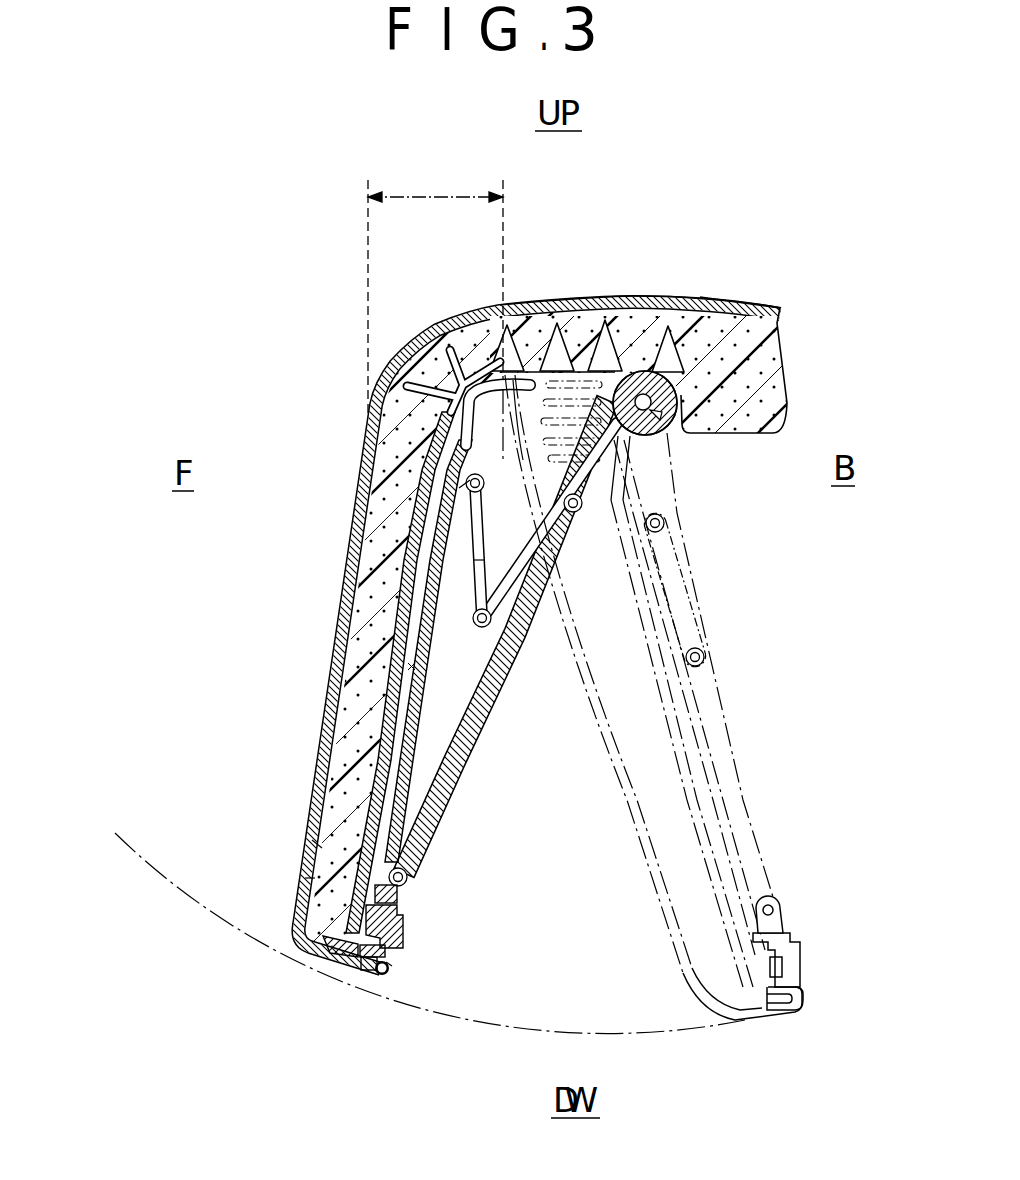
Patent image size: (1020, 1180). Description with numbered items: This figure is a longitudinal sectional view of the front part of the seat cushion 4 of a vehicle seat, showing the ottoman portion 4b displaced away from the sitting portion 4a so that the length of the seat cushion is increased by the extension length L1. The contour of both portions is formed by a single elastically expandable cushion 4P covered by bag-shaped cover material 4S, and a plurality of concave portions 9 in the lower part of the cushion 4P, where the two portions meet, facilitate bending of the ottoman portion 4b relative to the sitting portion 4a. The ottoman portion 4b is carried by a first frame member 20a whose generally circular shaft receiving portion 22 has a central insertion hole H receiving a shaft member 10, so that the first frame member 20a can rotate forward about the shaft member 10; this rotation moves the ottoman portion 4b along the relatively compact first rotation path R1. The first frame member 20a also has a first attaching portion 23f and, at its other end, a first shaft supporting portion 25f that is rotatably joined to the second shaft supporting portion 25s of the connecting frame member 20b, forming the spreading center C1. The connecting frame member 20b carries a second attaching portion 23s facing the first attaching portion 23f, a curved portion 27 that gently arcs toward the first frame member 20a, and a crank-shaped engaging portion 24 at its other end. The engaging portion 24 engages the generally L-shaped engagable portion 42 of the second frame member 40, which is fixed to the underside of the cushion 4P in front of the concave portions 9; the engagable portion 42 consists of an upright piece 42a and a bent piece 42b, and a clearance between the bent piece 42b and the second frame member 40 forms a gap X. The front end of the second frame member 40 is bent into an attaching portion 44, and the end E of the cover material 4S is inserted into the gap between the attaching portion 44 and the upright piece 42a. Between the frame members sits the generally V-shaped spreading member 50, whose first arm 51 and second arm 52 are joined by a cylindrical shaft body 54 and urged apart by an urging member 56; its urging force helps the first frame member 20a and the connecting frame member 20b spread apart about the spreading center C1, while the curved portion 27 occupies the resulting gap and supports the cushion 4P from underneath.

The seat cushion 4 is at (500, 583).
The sitting portion 4a is at (743, 291).
The ottoman portion 4b is at (358, 442).
The cushion 4P is at (752, 342).
The cover material 4S is at (758, 304).
The concave portions 9 is at (652, 332).
The shaft member 10 is at (660, 436).
The insertion hole H is at (649, 426).
The shaft receiving portion 22 is at (657, 442).
The first attaching portion 23f is at (578, 513).
The second attaching portion 23s is at (465, 492).
The curved portion 27 is at (445, 388).
The second frame member 40 is at (386, 668).
The first frame member 20a is at (476, 756).
The connecting frame member 20b is at (419, 787).
The gap X is at (488, 700).
The first shaft supporting portion 25f is at (409, 882).
The second shaft supporting portion 25s is at (321, 846).
The engaging portion 24 is at (399, 900).
The engagable portion 42 is at (478, 957).
The upright piece 42a is at (392, 949).
The bent piece 42b is at (403, 917).
The attaching portion 44 is at (364, 972).
The end of the cover material E is at (393, 966).
The spreading center C1 is at (314, 878).
The first rotation path R1 is at (180, 896).
The extension length L1 is at (435, 285).
The spreading member 50 is at (329, 562).
The first arm 51 is at (478, 503).
The second arm 52 is at (521, 560).
The shaft body 54 is at (476, 620).
The urging member 56 is at (342, 630).